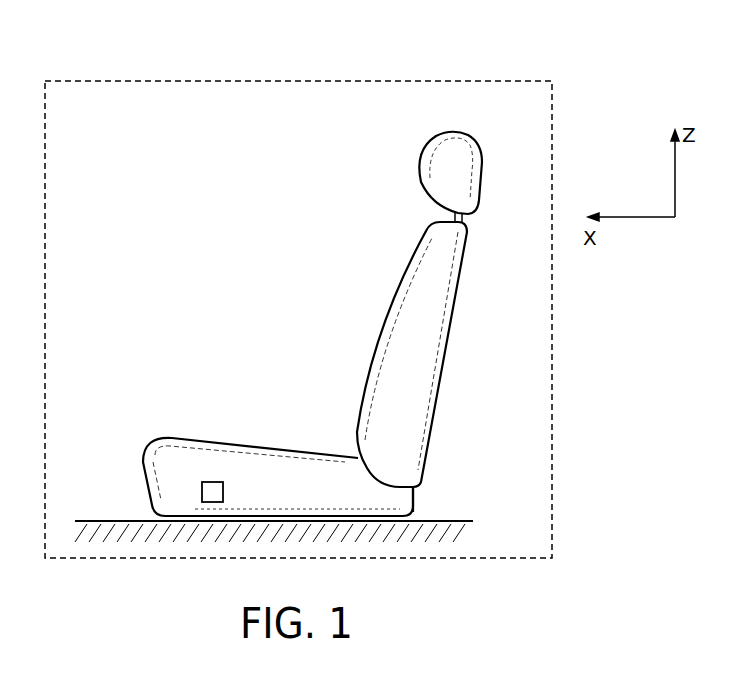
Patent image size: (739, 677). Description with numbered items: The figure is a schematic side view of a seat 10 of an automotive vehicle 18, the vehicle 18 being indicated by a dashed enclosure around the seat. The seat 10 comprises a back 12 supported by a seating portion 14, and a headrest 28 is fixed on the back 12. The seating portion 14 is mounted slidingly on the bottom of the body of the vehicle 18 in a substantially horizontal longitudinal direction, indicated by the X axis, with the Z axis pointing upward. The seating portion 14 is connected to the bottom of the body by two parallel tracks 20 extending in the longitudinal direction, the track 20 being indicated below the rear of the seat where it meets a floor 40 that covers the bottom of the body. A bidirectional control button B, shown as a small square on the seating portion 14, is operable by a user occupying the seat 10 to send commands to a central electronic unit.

The vehicle 18 is at (133, 80).
The seat 10 is at (310, 297).
The headrest 28 is at (435, 167).
The back 12 is at (425, 340).
The seating portion 14 is at (198, 463).
The bidirectional control button B is at (212, 492).
The track 20 is at (428, 513).
The floor 40 is at (105, 520).